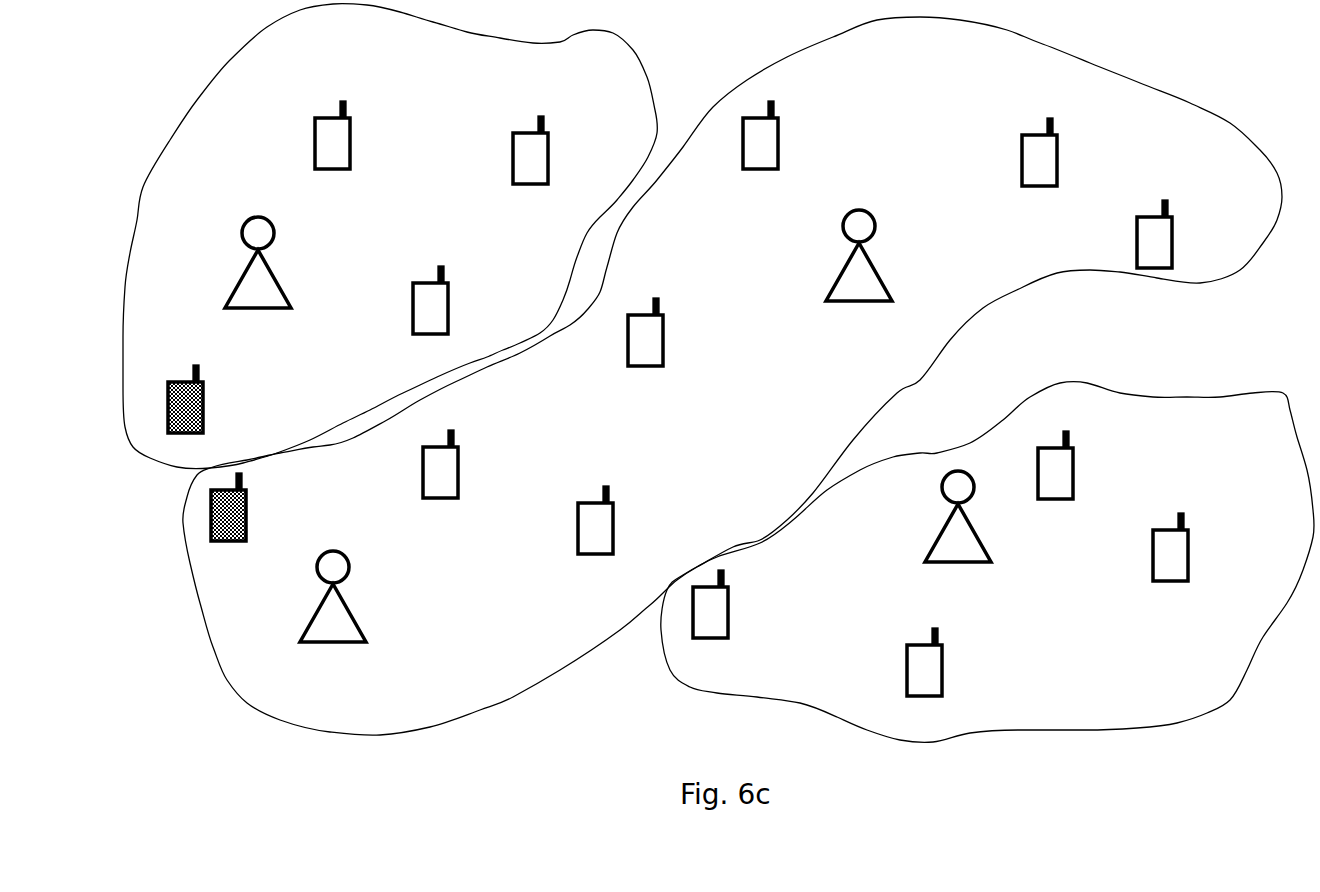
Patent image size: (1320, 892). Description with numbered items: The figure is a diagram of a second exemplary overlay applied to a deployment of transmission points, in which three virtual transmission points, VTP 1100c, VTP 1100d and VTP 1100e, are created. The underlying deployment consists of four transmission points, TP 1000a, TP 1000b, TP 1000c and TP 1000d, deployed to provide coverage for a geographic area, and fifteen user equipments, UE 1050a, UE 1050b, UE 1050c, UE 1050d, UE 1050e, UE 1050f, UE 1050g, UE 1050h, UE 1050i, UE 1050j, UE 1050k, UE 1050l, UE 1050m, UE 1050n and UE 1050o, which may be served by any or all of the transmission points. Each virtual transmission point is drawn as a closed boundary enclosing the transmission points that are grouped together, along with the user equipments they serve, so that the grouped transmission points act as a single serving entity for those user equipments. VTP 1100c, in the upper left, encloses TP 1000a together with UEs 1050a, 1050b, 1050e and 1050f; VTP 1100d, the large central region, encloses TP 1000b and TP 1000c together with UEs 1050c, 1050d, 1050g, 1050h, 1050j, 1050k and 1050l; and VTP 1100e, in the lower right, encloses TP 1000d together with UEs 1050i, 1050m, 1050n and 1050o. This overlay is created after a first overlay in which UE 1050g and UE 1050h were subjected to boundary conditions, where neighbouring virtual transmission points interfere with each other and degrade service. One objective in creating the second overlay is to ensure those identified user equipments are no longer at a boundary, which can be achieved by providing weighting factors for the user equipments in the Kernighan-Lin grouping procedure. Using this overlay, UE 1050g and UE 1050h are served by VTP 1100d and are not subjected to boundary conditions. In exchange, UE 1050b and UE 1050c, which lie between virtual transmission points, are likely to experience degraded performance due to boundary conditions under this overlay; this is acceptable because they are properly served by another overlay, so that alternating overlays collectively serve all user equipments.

The TP 1000a is at (301, 262).
The TP 1000b is at (381, 596).
The TP 1000c is at (909, 255).
The TP 1000d is at (1008, 517).
The UE 1050a is at (384, 135).
The UE 1050b is at (237, 399).
The UE 1050c is at (279, 507).
The UE 1050d is at (493, 464).
The UE 1050e is at (482, 300).
The UE 1050f is at (580, 150).
The UE 1050g is at (697, 332).
The UE 1050h is at (647, 520).
The UE 1050i is at (759, 604).
The UE 1050j is at (808, 135).
The UE 1050k is at (1090, 152).
The UE 1050l is at (1204, 234).
The UE 1050m is at (1108, 465).
The UE 1050n is at (1222, 547).
The UE 1050o is at (976, 662).
The VTP 1100c is at (390, 236).
The VTP 1100d is at (732, 376).
The VTP 1100e is at (987, 562).